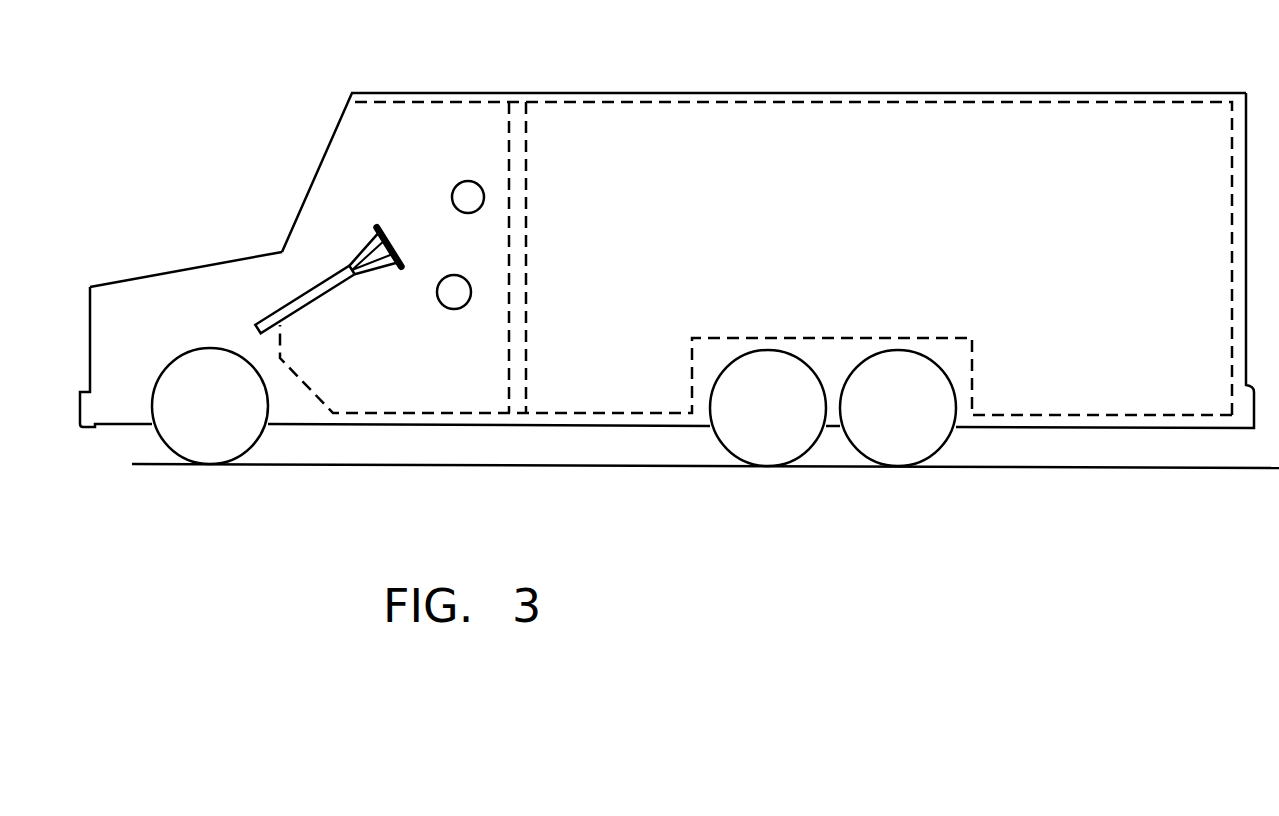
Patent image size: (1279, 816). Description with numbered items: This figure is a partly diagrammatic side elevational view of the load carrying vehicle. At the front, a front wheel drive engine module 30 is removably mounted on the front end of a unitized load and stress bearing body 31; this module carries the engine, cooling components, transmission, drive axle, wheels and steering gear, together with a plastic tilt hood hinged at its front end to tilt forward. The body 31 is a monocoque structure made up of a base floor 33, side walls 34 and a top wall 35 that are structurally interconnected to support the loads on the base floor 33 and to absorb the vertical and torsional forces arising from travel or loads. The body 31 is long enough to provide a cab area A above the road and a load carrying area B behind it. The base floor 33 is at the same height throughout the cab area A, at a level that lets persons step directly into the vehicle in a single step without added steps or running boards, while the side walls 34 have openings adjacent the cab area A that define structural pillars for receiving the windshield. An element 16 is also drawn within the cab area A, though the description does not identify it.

The nozzle 16 is at (375, 166).
The front wheel drive engine module 30 is at (667, 277).
The unitized load and stress bearing body 31 is at (645, 90).
The base floor 33 is at (608, 420).
The side walls 34 is at (643, 249).
The top wall 35 is at (827, 102).
The cab area A is at (443, 147).
The load carrying area B is at (823, 252).